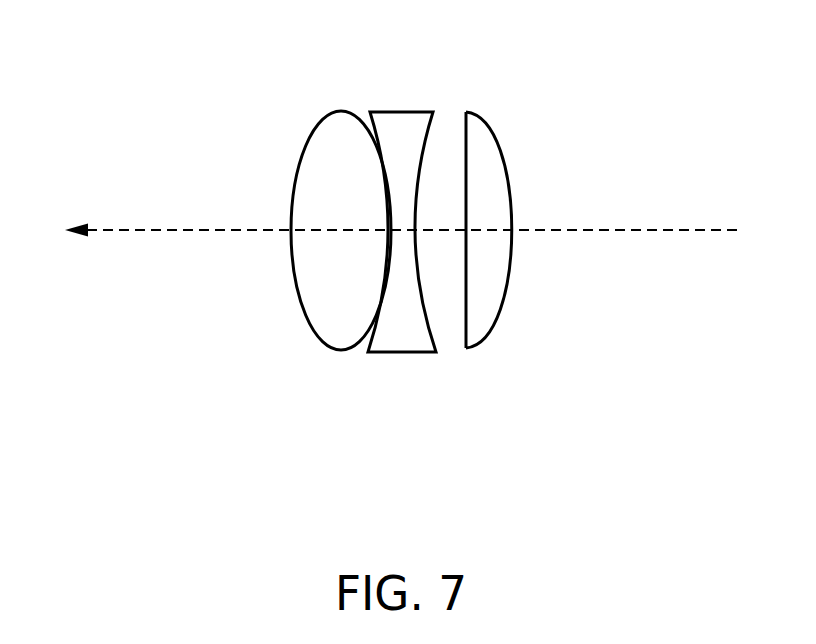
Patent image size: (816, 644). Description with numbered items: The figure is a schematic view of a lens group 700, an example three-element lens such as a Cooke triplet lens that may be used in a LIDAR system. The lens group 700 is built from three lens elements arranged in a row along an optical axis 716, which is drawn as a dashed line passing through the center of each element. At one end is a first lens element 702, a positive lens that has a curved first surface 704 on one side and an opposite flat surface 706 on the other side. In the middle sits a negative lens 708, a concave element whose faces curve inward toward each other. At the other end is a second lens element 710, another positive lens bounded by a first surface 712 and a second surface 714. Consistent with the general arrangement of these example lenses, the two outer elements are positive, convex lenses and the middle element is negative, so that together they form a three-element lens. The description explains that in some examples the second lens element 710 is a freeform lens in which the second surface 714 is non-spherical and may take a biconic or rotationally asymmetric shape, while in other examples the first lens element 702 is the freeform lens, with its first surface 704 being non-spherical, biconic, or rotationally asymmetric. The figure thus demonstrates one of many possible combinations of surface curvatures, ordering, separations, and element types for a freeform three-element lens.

The lens group 700 is at (668, 40).
The first lens element 702 is at (467, 350).
The first surface 704 is at (490, 118).
The flat surface 706 is at (466, 129).
The negative lens 708 is at (422, 347).
The second lens element 710 is at (357, 322).
The first surface 712 is at (352, 120).
The second surface 714 is at (315, 121).
The optical axis 716 is at (90, 228).